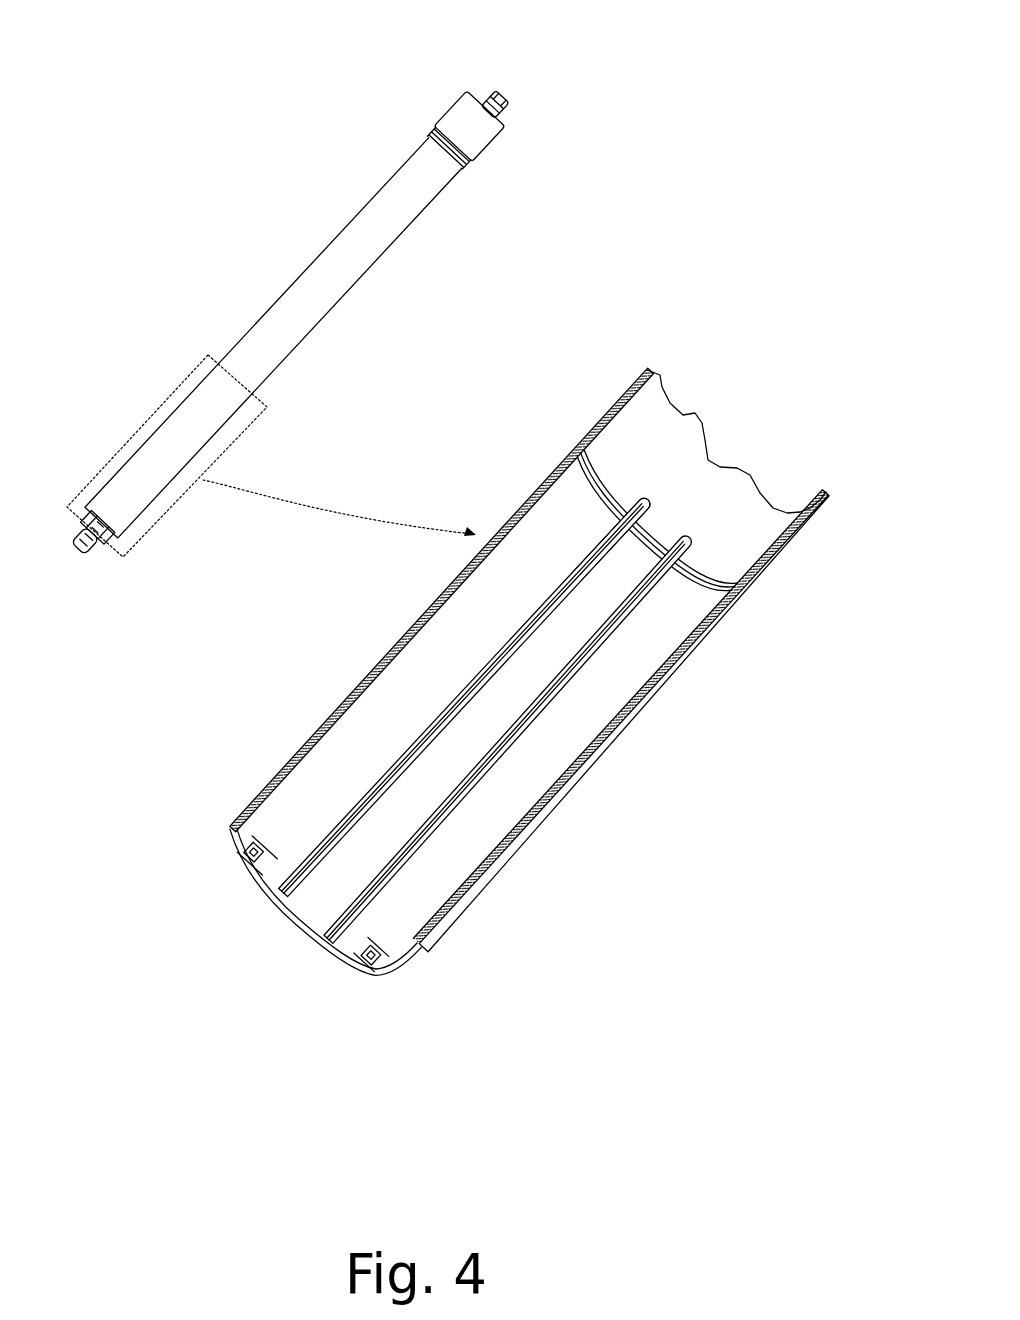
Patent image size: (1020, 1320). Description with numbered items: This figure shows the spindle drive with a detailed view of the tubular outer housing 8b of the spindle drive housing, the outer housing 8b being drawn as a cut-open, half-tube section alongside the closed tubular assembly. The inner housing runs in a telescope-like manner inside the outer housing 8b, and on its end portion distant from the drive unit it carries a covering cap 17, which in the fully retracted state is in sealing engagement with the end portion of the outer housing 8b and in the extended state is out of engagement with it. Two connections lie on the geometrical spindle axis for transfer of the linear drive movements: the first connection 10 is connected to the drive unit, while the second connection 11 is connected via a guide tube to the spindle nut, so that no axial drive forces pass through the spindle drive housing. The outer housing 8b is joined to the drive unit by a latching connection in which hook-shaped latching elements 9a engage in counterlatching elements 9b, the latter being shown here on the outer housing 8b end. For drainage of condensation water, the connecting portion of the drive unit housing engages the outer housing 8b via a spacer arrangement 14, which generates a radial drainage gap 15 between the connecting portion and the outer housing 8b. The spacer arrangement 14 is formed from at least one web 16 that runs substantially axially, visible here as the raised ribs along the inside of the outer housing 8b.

The outer housing 8b is at (345, 280).
The hook-shaped latching elements 9a is at (106, 512).
The counterlatching elements 9b is at (378, 973).
The first connection 10 is at (100, 547).
The second connection 11 is at (520, 102).
The spacer arrangement 14 is at (437, 749).
The radial drainage gap 15 is at (314, 906).
The web 16 is at (600, 560).
The covering cap 17 is at (486, 132).